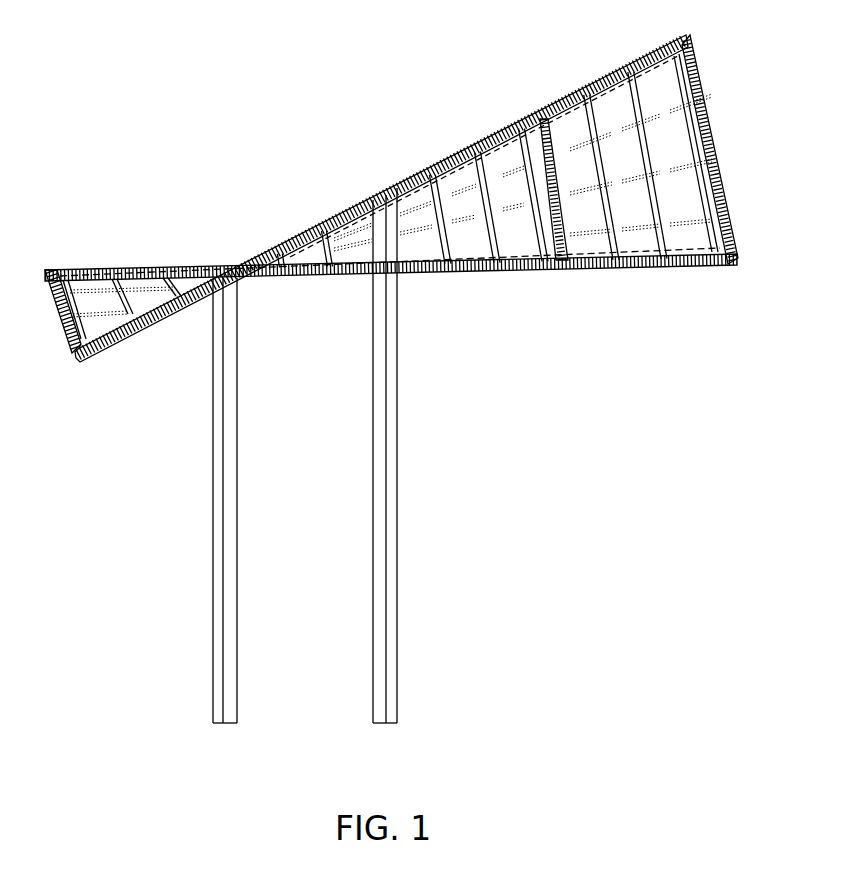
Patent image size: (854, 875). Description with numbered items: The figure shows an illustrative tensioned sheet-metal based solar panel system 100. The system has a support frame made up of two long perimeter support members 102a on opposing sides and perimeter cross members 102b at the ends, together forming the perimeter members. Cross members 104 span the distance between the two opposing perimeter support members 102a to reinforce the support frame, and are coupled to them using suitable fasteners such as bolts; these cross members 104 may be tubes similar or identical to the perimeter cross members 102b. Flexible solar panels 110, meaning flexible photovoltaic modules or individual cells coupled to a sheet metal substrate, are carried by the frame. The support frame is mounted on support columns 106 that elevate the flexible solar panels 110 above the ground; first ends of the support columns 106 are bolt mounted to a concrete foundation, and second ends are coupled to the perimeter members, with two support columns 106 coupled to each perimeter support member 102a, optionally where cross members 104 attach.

The tensioned sheet-metal based solar panel system 100 is at (399, 379).
The perimeter support members 102a is at (150, 268).
The perimeter cross members 102b is at (58, 323).
The cross members 104 is at (555, 238).
The support columns 106 is at (215, 525).
The flexible solar panels 110 is at (687, 238).